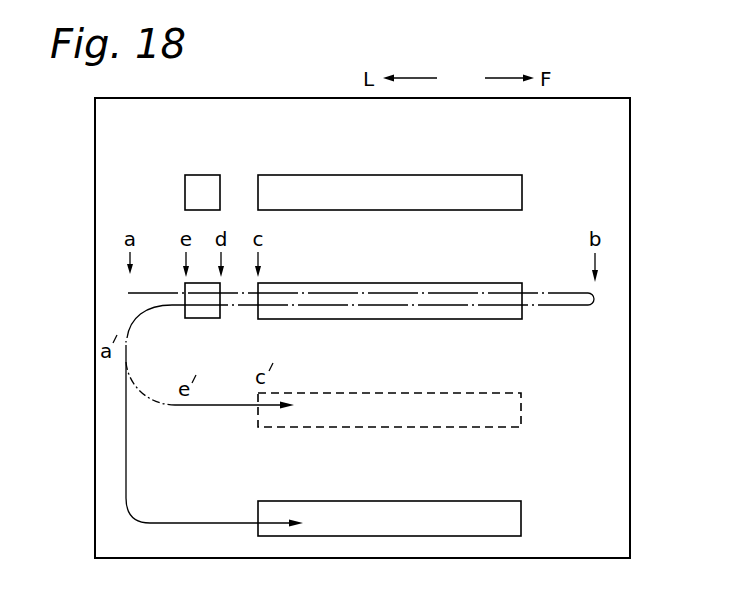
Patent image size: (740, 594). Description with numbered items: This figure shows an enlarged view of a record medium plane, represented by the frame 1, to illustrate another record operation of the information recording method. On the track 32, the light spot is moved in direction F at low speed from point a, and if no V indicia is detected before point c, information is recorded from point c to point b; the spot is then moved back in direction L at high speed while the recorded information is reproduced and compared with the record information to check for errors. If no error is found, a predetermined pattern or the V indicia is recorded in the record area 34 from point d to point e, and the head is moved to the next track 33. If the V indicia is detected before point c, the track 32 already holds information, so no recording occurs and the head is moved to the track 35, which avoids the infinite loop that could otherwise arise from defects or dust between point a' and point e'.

The recording medium / frame 1 is at (631, 139).
The track 32 is at (470, 283).
The next track 33 is at (522, 407).
The record area 34 is at (199, 318).
The track 35 is at (522, 514).